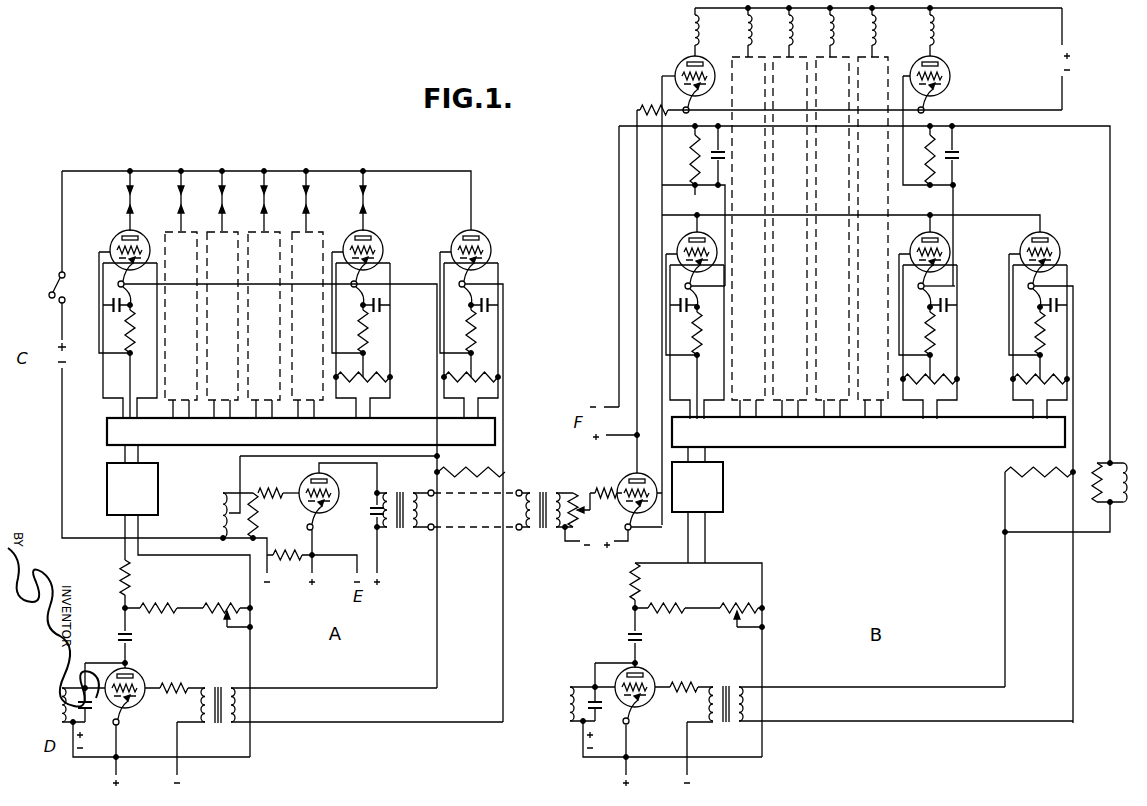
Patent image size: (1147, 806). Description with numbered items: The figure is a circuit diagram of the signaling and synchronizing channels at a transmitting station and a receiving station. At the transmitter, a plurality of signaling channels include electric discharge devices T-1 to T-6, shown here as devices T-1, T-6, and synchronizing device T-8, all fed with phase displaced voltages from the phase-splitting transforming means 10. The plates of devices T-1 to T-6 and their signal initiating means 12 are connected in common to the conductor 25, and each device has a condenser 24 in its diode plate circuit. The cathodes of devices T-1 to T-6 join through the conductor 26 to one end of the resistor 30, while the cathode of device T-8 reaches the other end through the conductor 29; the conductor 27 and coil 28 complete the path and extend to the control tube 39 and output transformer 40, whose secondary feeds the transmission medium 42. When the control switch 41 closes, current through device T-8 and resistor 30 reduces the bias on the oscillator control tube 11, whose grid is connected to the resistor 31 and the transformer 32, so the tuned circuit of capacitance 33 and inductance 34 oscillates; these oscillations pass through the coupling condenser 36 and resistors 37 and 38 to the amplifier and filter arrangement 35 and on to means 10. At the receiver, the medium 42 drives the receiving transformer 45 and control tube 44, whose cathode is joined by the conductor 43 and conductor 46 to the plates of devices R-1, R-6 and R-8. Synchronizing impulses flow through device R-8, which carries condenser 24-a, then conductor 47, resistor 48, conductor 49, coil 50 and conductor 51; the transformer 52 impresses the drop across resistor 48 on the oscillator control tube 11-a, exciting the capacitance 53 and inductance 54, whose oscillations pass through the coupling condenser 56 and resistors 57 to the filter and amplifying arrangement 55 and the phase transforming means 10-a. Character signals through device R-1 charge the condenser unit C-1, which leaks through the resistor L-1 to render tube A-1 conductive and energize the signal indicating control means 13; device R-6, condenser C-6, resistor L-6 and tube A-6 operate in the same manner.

The phase-splitting transforming means 10 is at (107, 431).
The phase transforming means 10-a is at (870, 451).
The oscillator control tube 11 is at (142, 674).
The oscillator control tube 11-a is at (652, 678).
The signal initiating means 12 is at (120, 207).
The signal indicating control means 13 is at (703, 39).
The condenser 24 is at (112, 310).
The condenser 24-a is at (680, 309).
The common conductor 25 is at (264, 171).
The conductor 26 is at (390, 379).
The conductor 27 is at (395, 457).
The coil 28 is at (218, 520).
The conductor 29 is at (503, 390).
The resistor 30 is at (479, 466).
The resistor 31 is at (178, 692).
The transformer 32 is at (228, 678).
The capacitance 33 is at (94, 706).
The inductance 34 is at (62, 688).
The amplifier and filter arrangement 35 is at (107, 494).
The coupling condenser 36 is at (121, 640).
The resistor 37 is at (174, 604).
The resistor 38 is at (226, 604).
The control tube 39 is at (320, 525).
The output transformer 40 is at (403, 538).
The control switch 41 is at (54, 280).
The transmission medium 42 is at (470, 495).
The conductor 43 is at (669, 217).
The control tube 44 is at (618, 485).
The receiving transformer 45 is at (562, 480).
The conductor 46 is at (660, 391).
The conductor 47 is at (1073, 355).
The resistor 48 is at (1037, 478).
The conductor 49 is at (1086, 533).
The coil 50 is at (1122, 504).
The conductor 51 is at (1108, 191).
The transformer 52 is at (734, 727).
The capacitance 53 is at (601, 705).
The inductance 54 is at (565, 703).
The filter and amplifying arrangement 55 is at (725, 502).
The coupling condenser 56 is at (625, 645).
The resistors 57 is at (739, 604).
The electric discharge device T-1 is at (114, 246).
The electric discharge device T-6 is at (371, 236).
The electric discharge device T-8 is at (487, 251).
The electric discharge device R-1 is at (683, 246).
The electric discharge device R-6 is at (914, 249).
The electric discharge device R-8 is at (1050, 242).
The tube A-1 is at (677, 74).
The tube A-6 is at (946, 74).
The resistor L-1 is at (689, 161).
The resistor L-6 is at (925, 183).
The condenser unit C-1 is at (726, 158).
The condenser unit C-6 is at (957, 158).